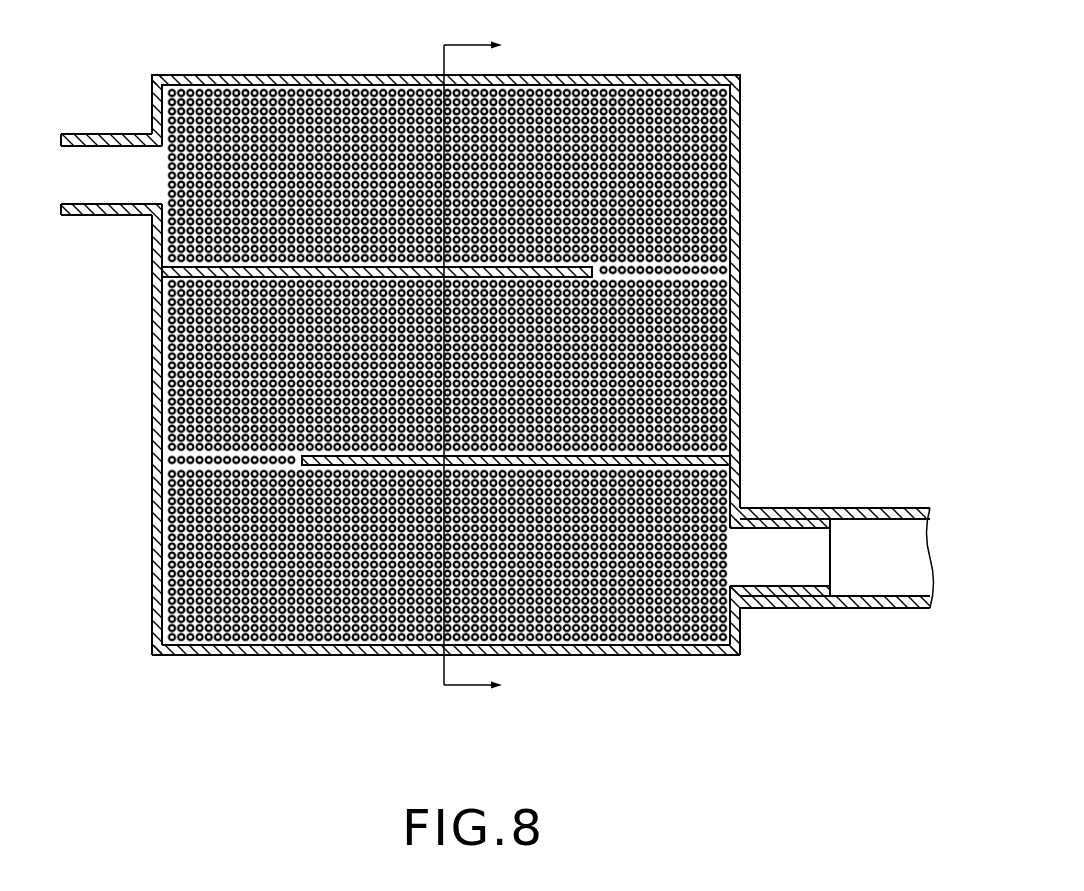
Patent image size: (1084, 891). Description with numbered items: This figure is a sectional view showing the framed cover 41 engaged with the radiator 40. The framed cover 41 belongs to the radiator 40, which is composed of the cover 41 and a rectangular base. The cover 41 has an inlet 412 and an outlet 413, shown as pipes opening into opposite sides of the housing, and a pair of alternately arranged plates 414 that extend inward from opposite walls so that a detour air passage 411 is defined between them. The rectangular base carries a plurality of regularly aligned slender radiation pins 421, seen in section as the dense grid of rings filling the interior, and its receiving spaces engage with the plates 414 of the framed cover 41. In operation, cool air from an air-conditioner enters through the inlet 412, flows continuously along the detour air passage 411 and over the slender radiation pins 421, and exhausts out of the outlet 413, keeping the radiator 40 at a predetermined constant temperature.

The radiator 40 is at (497, 379).
The framed cover 41 is at (543, 413).
The detour air passage 411 is at (622, 657).
The inlet 412 is at (797, 577).
The outlet 413 is at (93, 134).
The plates 414 is at (538, 463).
The slender radiation pins 421 is at (380, 638).